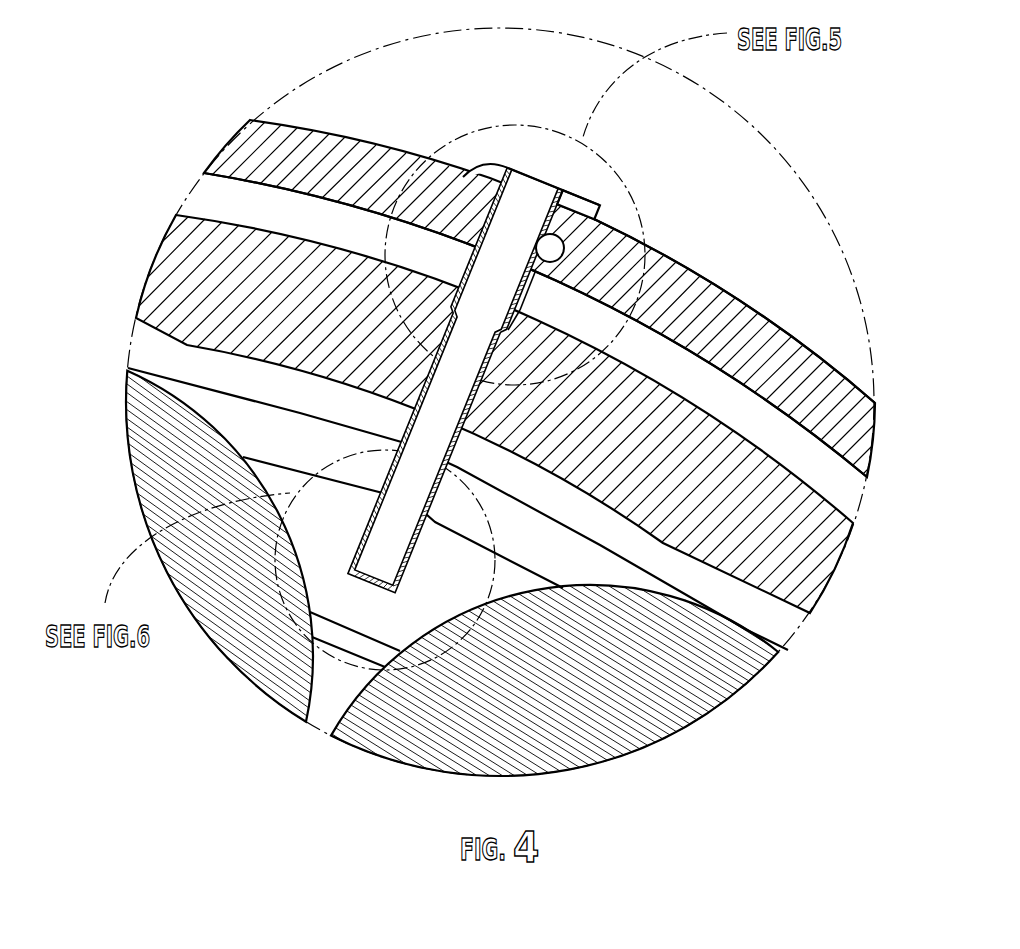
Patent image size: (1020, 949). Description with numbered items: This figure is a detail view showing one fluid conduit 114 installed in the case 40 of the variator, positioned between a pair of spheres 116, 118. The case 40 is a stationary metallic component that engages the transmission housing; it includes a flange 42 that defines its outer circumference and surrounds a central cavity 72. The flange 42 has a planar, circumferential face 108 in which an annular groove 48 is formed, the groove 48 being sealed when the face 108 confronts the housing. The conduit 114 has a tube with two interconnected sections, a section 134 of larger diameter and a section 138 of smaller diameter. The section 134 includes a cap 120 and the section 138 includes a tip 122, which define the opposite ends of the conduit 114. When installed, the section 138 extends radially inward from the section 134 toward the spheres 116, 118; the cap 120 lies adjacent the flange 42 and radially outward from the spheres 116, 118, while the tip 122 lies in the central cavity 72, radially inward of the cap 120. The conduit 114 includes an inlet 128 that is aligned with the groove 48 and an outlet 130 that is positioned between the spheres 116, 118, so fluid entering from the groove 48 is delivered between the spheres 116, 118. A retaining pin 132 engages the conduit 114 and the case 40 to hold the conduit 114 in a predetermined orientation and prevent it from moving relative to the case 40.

The case 40 is at (817, 367).
The flange 42 is at (312, 153).
The annular groove 48 is at (350, 230).
The central cavity 72 is at (330, 593).
The circumferential face 108 is at (750, 337).
The conduit 114 is at (470, 175).
The sphere 116 is at (243, 657).
The sphere 118 is at (617, 742).
The cap 120 is at (547, 177).
The tip 122 is at (368, 605).
The inlet 128 is at (550, 290).
The outlet 130 is at (442, 565).
The retaining pin 132 is at (560, 247).
The section 134 is at (533, 307).
The section 138 is at (467, 450).